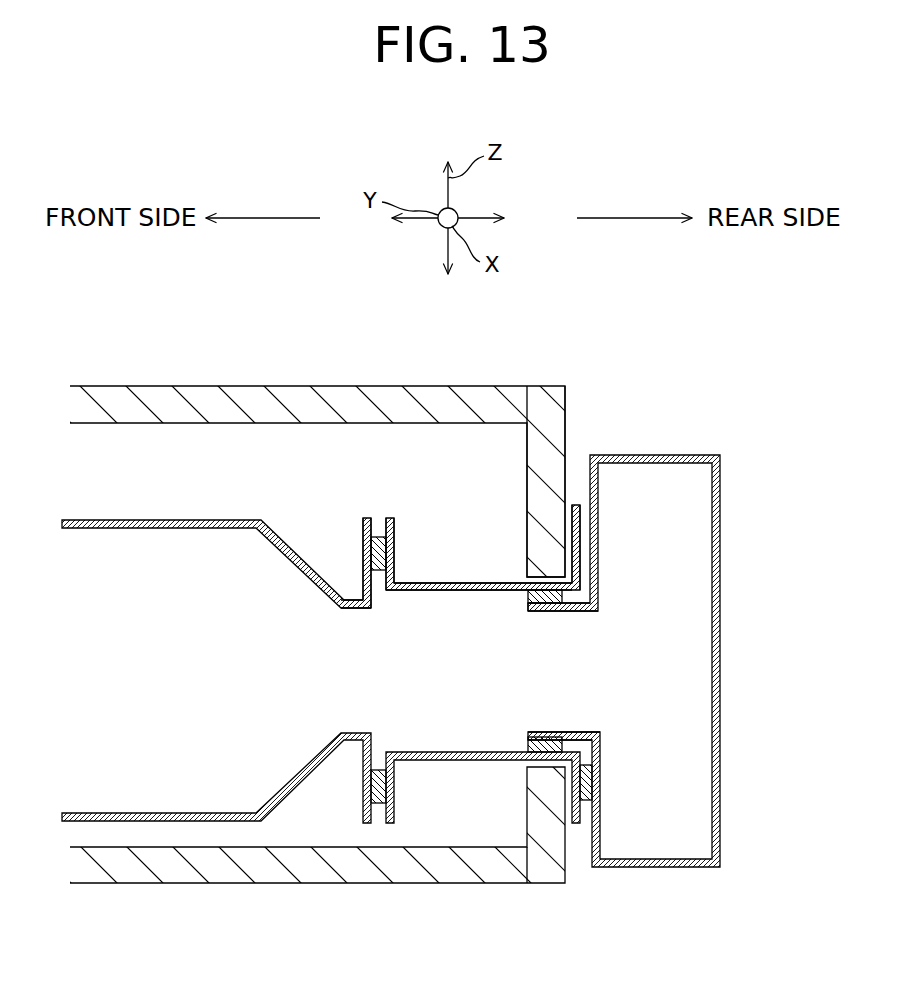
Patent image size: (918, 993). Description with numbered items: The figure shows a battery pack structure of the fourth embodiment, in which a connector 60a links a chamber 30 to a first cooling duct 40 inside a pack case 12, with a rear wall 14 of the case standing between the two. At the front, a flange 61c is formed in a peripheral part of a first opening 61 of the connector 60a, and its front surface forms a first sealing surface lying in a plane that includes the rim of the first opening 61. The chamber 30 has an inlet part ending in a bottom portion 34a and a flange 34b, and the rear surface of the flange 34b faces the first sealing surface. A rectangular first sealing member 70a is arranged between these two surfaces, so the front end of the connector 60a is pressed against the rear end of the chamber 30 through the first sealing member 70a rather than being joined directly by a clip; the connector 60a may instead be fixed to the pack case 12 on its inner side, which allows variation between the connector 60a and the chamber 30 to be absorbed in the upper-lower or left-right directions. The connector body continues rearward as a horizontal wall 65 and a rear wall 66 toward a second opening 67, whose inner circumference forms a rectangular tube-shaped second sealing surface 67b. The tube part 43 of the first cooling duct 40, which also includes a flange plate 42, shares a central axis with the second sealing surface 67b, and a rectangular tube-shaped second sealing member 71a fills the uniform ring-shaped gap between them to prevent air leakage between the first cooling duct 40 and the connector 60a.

The pack case 12 is at (459, 606).
The rear wall of housing 14 is at (404, 400).
The chamber 30 is at (216, 636).
The bottom flange portion 34a is at (355, 609).
The flange 34b is at (366, 527).
The first sealing member 70a is at (380, 538).
The flange 61c is at (393, 530).
The first opening 61 is at (530, 551).
The horizontal wall of bracket 65 is at (478, 580).
The rear vertical wall of bracket 66 is at (578, 516).
The first cooling duct 40 is at (668, 657).
The tube part 43 is at (530, 612).
The frame flange plate 42 is at (599, 616).
The second sealing surface 67b is at (578, 608).
The second opening 67 is at (578, 746).
The connector 60a is at (450, 763).
The second sealing member 71a is at (528, 742).